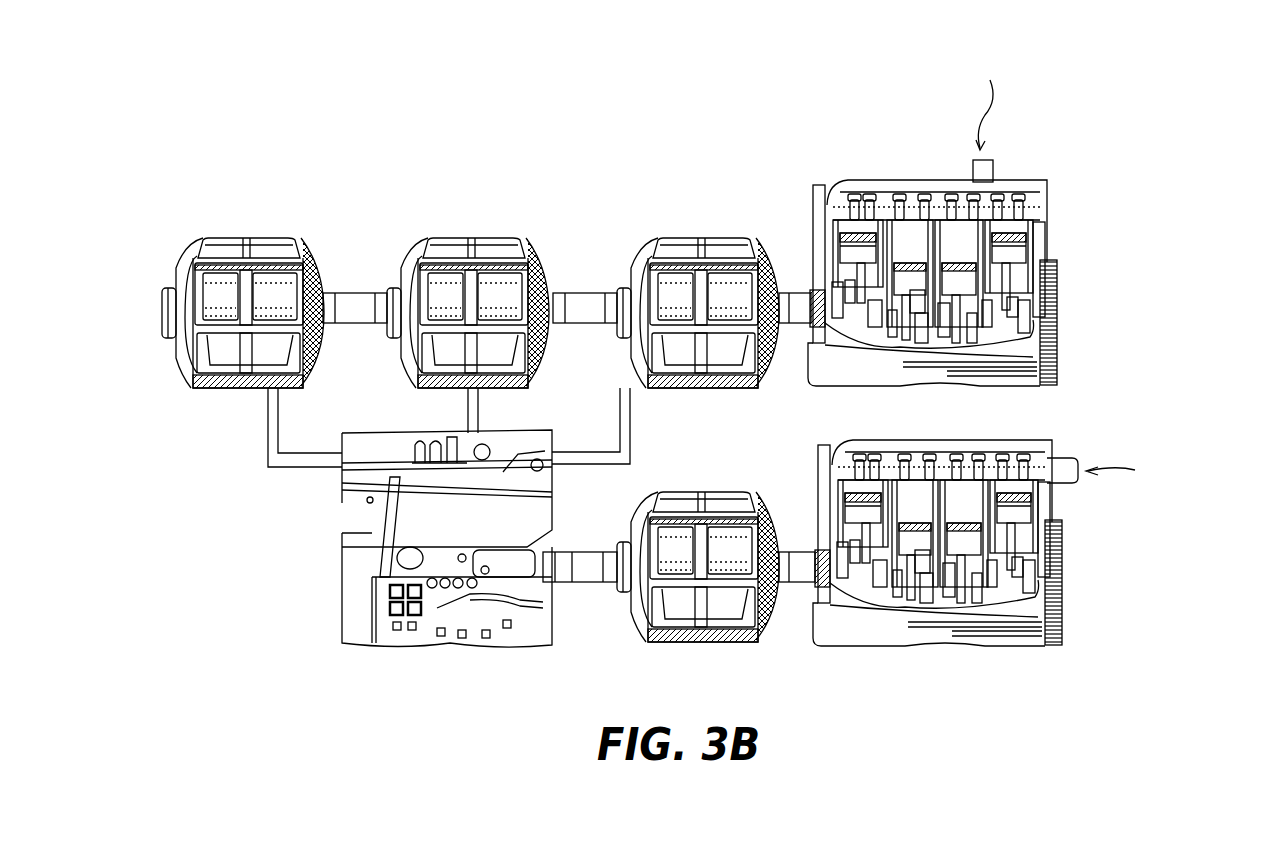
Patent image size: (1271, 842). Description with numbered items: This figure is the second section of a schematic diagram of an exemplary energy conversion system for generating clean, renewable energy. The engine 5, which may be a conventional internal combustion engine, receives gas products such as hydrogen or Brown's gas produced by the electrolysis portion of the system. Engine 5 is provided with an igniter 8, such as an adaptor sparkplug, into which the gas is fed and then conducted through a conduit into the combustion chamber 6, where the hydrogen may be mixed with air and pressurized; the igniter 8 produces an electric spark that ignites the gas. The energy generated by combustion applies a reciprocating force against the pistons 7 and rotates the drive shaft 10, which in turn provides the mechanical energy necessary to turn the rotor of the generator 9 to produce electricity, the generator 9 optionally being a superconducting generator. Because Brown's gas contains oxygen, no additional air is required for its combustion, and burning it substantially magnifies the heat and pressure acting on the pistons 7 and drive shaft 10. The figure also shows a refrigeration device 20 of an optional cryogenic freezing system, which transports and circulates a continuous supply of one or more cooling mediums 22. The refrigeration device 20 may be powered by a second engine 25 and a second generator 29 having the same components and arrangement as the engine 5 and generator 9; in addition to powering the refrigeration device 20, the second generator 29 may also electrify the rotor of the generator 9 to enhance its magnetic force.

The engine 5 is at (1060, 301).
The combustion chamber 6 is at (1040, 216).
The pistons 7 is at (1020, 249).
The igniter 8 is at (995, 165).
The generator 9 is at (161, 304).
The drive shaft 10 is at (354, 291).
The refrigeration device 20 is at (356, 509).
The cooling mediums 22 is at (267, 434).
The second engine 25 is at (1063, 563).
The second generator 29 is at (712, 490).